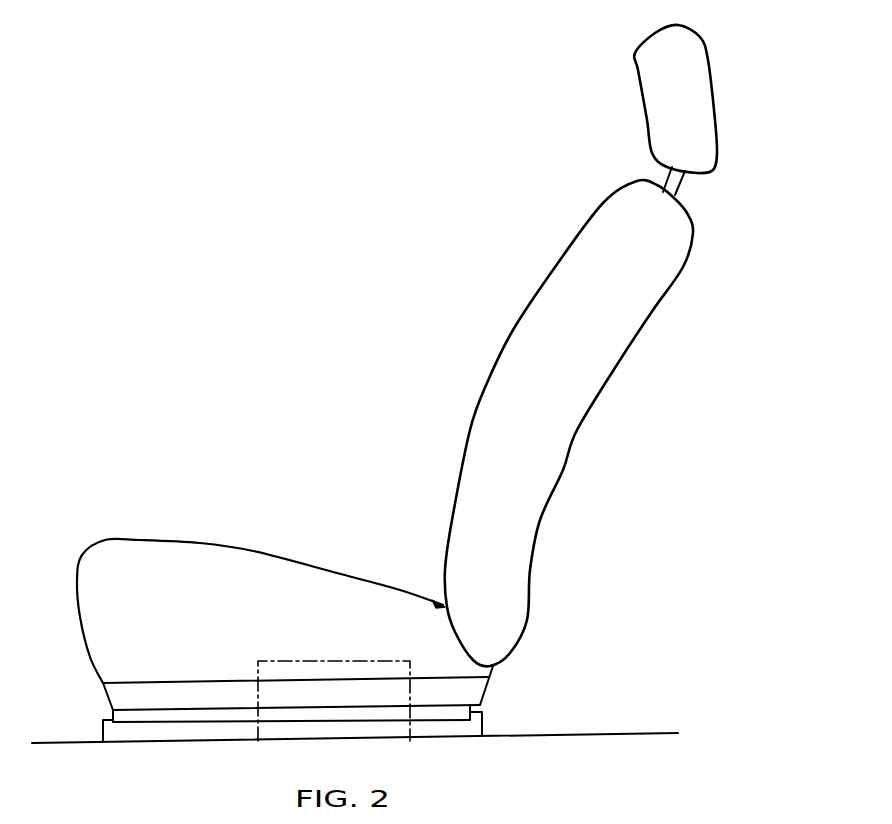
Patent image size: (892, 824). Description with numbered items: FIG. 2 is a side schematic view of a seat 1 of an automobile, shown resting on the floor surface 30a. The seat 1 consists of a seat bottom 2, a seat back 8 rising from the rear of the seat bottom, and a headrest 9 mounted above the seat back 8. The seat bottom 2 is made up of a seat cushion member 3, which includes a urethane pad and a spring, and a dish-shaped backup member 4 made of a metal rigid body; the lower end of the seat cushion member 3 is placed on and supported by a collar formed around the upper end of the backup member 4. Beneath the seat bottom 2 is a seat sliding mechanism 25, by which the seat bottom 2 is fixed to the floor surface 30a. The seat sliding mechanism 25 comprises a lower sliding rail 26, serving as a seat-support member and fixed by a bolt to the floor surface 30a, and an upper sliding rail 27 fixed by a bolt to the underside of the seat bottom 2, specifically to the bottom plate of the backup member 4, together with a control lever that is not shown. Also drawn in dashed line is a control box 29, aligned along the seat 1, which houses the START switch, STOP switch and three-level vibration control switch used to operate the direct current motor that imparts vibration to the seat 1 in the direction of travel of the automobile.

The seat 1 is at (596, 438).
The seat bottom 2 is at (252, 571).
The seat cushion member 3 is at (157, 557).
The backup member 4 is at (118, 697).
The seat back 8 is at (495, 395).
The headrest 9 is at (655, 93).
The seat sliding mechanism 25 is at (585, 652).
The lower sliding rail 26 is at (467, 728).
The upper sliding rail 27 is at (457, 715).
The control box 29 is at (328, 660).
The floor surface 30a is at (657, 732).